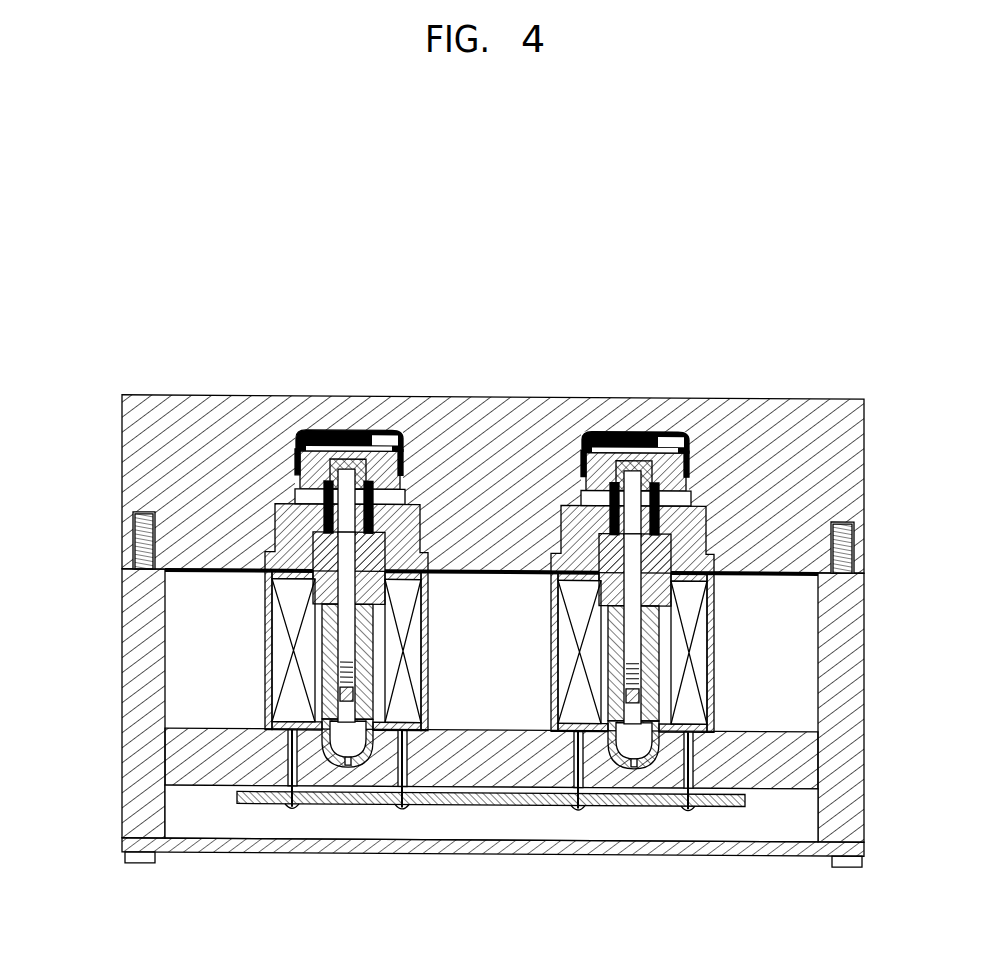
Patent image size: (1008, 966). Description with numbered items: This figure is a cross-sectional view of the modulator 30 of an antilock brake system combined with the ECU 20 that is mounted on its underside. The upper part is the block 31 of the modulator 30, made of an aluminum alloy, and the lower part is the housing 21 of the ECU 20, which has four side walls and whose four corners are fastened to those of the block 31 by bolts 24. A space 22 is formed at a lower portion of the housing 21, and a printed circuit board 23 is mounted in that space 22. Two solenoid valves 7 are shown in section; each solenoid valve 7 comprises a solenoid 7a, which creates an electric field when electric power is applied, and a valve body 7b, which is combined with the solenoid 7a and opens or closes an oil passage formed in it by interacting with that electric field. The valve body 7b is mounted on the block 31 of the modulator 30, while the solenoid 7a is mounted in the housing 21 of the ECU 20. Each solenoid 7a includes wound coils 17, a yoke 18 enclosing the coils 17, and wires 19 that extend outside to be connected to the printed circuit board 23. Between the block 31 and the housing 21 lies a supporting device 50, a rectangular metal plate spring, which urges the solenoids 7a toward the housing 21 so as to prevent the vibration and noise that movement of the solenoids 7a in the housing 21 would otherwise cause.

The solenoid valve 7 is at (238, 675).
The solenoid 7a is at (258, 618).
The valve body 7b is at (280, 494).
The coils 17 is at (700, 712).
The yoke 18 is at (549, 686).
The wires 19 is at (419, 792).
The ECU 20 is at (278, 862).
The housing 21 is at (857, 657).
The space 22 is at (623, 826).
The printed circuit board 23 is at (348, 800).
The bolts 24 is at (855, 543).
The modulator 30 is at (478, 607).
The block 31 is at (542, 388).
The supporting device 50 is at (491, 560).